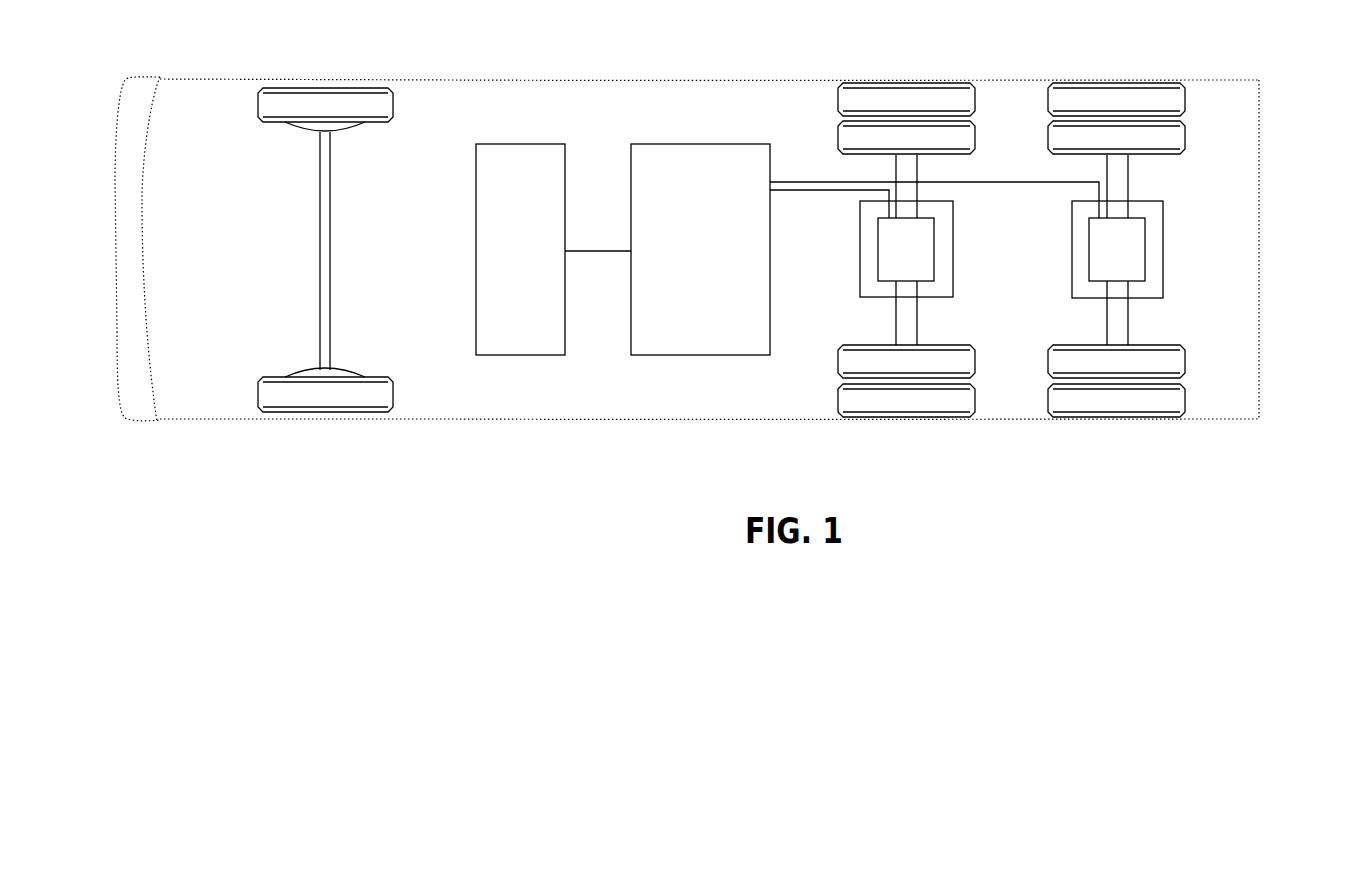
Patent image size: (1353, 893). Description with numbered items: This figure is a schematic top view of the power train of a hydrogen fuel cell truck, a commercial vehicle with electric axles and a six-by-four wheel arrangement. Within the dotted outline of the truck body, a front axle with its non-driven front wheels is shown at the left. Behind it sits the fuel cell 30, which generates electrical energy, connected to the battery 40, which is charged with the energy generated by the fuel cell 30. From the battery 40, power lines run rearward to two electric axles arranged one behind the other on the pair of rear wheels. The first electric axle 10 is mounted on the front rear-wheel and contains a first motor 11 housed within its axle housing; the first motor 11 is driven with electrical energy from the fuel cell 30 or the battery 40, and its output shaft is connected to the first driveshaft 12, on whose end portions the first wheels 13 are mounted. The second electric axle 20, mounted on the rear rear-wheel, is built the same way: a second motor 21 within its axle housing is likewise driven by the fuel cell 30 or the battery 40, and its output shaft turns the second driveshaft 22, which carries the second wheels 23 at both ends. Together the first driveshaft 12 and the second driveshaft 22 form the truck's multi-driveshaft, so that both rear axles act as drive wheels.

The first electric axle 10 is at (888, 294).
The first motor 11 is at (878, 243).
The first driveshaft 12 is at (909, 322).
The first wheel 13 is at (908, 398).
The second electric axle 20 is at (1186, 295).
The second motor 21 is at (1145, 229).
The second driveshaft 22 is at (1117, 323).
The second wheel 23 is at (1117, 398).
The fuel cell 30 is at (516, 355).
The battery 40 is at (715, 355).